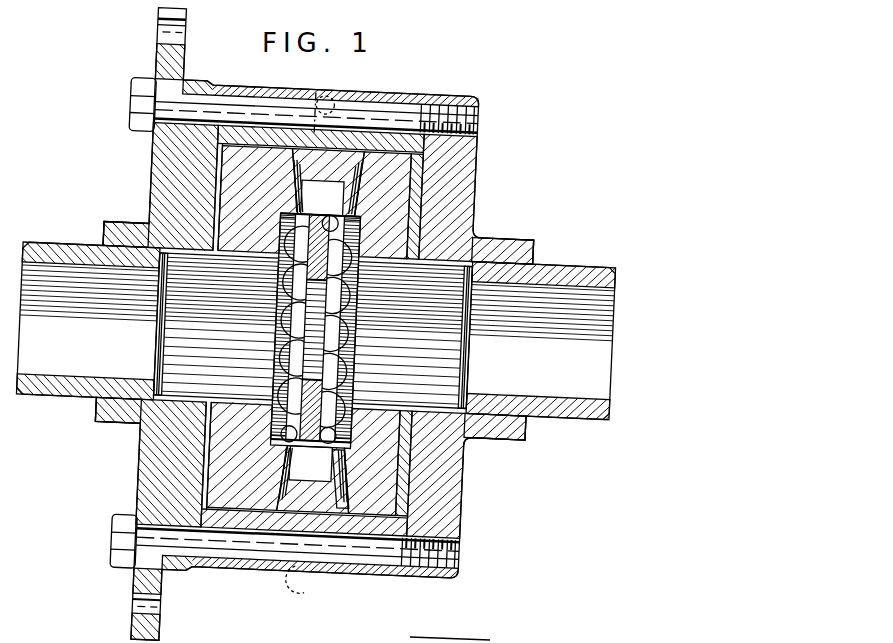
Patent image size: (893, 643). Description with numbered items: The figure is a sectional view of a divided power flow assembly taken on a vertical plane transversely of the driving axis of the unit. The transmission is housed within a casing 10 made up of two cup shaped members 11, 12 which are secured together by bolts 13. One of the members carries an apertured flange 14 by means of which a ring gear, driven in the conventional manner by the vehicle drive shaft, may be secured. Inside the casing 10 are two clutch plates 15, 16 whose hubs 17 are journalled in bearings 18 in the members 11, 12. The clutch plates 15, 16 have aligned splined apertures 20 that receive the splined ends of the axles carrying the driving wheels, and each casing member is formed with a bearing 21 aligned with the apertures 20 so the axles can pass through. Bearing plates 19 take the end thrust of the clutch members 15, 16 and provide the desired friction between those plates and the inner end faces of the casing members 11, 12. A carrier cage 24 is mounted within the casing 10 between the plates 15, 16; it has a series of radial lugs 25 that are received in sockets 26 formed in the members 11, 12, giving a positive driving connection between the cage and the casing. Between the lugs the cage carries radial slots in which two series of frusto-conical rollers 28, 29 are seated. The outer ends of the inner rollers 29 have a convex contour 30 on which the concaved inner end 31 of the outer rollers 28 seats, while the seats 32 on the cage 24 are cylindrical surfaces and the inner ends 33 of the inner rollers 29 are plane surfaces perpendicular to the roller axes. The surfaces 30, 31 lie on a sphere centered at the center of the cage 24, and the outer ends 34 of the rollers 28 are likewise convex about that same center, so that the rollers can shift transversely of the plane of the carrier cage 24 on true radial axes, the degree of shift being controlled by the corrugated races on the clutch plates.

The casing 10 is at (458, 88).
The cup shaped member 11 is at (472, 187).
The cup shaped member 12 is at (165, 156).
The bolts 13 is at (473, 127).
The apertured flange 14 is at (174, 72).
The clutch plate 15 is at (405, 232).
The clutch plate 16 is at (232, 207).
The hubs 17 is at (166, 262).
The bearings 18 is at (150, 424).
The bearing plates 19 is at (205, 468).
The splined apertures 20 is at (183, 327).
The bearing 21 is at (55, 384).
The carrier cage 24 is at (312, 403).
The radial lugs 25 is at (332, 108).
The sockets 26 is at (340, 98).
The outer rollers 28 is at (352, 143).
The inner rollers 29 is at (340, 198).
The convex contour 30 is at (296, 482).
The concaved end 31 is at (338, 492).
The seats 32 is at (340, 224).
The inner ends 33 is at (293, 217).
The outer ends 34 is at (313, 527).